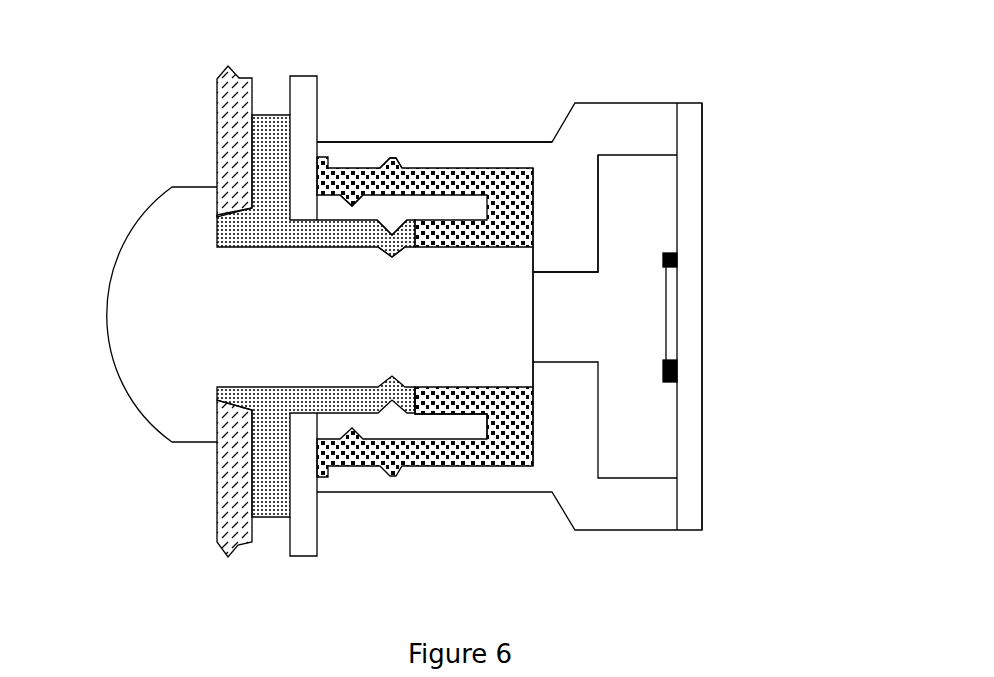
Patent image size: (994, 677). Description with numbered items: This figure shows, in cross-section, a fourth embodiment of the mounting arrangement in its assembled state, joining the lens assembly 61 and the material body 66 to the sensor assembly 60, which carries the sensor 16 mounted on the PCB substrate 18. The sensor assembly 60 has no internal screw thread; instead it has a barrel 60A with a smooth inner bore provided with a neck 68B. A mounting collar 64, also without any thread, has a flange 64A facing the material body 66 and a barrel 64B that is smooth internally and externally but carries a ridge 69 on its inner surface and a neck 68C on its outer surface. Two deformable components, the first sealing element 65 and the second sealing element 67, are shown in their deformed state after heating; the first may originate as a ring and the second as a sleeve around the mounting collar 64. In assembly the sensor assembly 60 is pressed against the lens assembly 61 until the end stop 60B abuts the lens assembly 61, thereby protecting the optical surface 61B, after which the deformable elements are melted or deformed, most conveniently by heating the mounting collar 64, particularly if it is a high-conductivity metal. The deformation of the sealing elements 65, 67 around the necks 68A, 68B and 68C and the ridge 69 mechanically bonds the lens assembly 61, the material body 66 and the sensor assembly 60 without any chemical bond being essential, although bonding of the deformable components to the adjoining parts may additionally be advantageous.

The sensor 16 is at (678, 322).
The PCB substrate 18 is at (690, 452).
The sensor assembly 60 is at (548, 128).
The barrel 60A is at (368, 142).
The end stop 60B is at (560, 245).
The lens assembly 61 is at (172, 375).
The optical surface 61B is at (535, 297).
The mounting collar 64 is at (328, 503).
The flange 64A is at (318, 88).
The barrel 64B is at (443, 427).
The first sealing element 65 is at (262, 113).
The material body 66 is at (215, 103).
The second sealing element 67 is at (457, 168).
The neck 68A is at (405, 258).
The neck 68B is at (392, 155).
The neck 68C is at (340, 207).
The ridge 69 is at (393, 240).